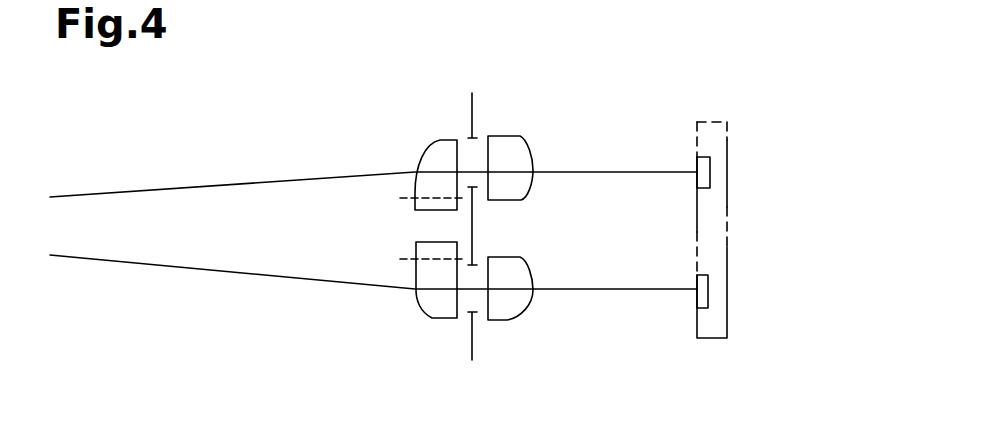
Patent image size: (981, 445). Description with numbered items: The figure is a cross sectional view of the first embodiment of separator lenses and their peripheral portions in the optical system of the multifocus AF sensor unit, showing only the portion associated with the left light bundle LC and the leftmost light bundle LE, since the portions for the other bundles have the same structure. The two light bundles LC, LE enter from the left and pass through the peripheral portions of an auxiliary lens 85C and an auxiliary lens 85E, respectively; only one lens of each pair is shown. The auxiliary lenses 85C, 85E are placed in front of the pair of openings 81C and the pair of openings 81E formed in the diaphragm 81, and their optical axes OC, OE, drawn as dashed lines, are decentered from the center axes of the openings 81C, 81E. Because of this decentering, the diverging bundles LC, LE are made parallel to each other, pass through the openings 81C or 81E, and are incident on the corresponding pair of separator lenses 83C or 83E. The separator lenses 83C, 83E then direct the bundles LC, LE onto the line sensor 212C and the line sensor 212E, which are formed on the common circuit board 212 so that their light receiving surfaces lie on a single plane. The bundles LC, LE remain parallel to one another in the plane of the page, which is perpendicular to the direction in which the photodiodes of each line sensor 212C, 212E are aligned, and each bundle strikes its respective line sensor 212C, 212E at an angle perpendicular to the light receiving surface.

The diaphragm 81 is at (469, 226).
The pair of openings 81C is at (472, 150).
The pair of openings 81E is at (468, 298).
The pair of separator lenses 83C is at (510, 147).
The pair of separator lenses 83E is at (505, 305).
The auxiliary lenses 85C is at (437, 157).
The auxiliary lenses 85E is at (440, 303).
The common circuit board 212 is at (772, 212).
The line sensor 212C is at (707, 172).
The line sensor 212E is at (703, 293).
The left light bundle LC is at (162, 187).
The leftmost light bundle LE is at (160, 267).
The optical axis of auxiliary lens OC is at (402, 198).
The optical axis of auxiliary lens OE is at (402, 259).